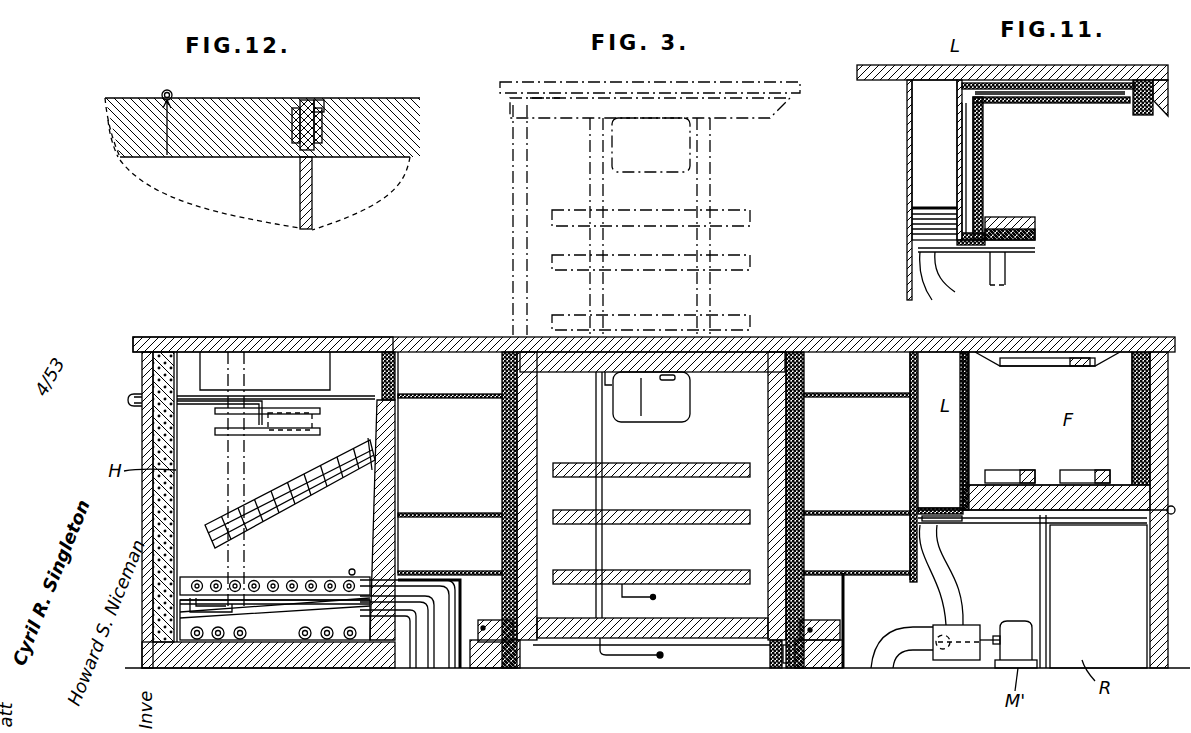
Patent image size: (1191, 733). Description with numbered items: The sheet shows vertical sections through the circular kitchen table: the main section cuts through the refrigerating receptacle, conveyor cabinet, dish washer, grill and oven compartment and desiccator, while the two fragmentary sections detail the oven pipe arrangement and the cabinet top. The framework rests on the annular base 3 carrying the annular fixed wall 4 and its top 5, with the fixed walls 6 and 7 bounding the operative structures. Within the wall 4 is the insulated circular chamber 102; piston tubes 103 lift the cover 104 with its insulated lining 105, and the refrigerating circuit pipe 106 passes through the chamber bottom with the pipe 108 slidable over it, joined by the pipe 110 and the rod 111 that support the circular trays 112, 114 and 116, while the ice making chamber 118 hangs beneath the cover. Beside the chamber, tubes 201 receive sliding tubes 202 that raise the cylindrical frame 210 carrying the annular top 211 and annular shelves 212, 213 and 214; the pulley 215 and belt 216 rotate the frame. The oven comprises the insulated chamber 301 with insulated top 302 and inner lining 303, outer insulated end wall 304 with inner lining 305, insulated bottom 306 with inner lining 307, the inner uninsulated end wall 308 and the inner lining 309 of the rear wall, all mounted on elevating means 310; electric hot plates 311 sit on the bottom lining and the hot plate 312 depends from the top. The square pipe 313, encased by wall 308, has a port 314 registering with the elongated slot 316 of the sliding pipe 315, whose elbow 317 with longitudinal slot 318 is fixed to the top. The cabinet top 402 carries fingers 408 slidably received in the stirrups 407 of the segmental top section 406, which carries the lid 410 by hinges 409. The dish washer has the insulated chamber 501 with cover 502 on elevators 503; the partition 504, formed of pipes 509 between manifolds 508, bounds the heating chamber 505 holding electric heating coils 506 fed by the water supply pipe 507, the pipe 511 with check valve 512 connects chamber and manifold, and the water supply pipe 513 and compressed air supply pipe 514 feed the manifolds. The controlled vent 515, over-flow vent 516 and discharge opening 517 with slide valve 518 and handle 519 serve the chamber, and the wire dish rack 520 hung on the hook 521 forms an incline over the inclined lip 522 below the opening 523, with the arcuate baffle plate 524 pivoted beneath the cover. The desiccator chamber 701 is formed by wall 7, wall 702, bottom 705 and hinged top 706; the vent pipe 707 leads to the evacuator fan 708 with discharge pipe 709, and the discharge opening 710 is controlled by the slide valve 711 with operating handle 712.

In FIG. 3, the annular base 3 is at (492, 668).
In FIG. 3, the annular fixed wall 4 is at (510, 668).
In FIG. 3, the top 5 is at (763, 86).
In FIG. 12, the fixed wall 6 is at (300, 215).
In FIG. 11, the fixed wall 6 is at (1150, 70).
In FIG. 3, the fixed wall 6 is at (142, 432).
In FIG. 11, the fixed wall 7 is at (907, 140).
In FIG. 3, the fixed wall 7 is at (398, 439).
In FIG. 3, the insulated circular chamber 102 is at (651, 619).
In FIG. 3, the piston tubes 103 is at (512, 160).
In FIG. 3, the cover 104 is at (690, 98).
In FIG. 3, the insulated lining 105 is at (618, 104).
In FIG. 3, the refrigerating circuit pipe 106 is at (663, 656).
In FIG. 3, the pipe 108 is at (600, 175).
In FIG. 3, the pipe 110 is at (605, 385).
In FIG. 3, the rod 111 is at (638, 599).
In FIG. 3, the circular tray 112 is at (698, 570).
In FIG. 3, the circular tray 114 is at (750, 258).
In FIG. 3, the circular tray 116 is at (725, 463).
In FIG. 3, the ice making chamber 118 is at (690, 395).
In FIG. 3, the tubes 201 is at (776, 668).
In FIG. 3, the tubes 202 is at (787, 668).
In FIG. 3, the cylindrical frame 210 is at (502, 431).
In FIG. 3, the annular top 211 is at (466, 337).
In FIG. 3, the annular shelf 212 is at (455, 394).
In FIG. 3, the annular shelf 213 is at (442, 513).
In FIG. 3, the annular shelf 214 is at (460, 571).
In FIG. 3, the pulley 215 is at (495, 620).
In FIG. 3, the belt 216 is at (850, 623).
In FIG. 3, the insulated chamber 301 is at (1050, 418).
In FIG. 11, the insulated top 302 is at (1110, 65).
In FIG. 3, the insulated top 302 is at (1045, 337).
In FIG. 3, the inner lining 303 is at (1100, 352).
In FIG. 11, the outer insulated end wall 304 is at (1150, 110).
In FIG. 3, the outer insulated end wall 304 is at (1133, 383).
In FIG. 11, the inner lining 305 is at (1135, 105).
In FIG. 3, the inner lining 305 is at (1132, 409).
In FIG. 11, the insulated bottom 306 is at (1035, 232).
In FIG. 3, the insulated bottom 306 is at (1072, 518).
In FIG. 11, the inner lining 307 is at (1022, 217).
In FIG. 3, the inner lining 307 is at (1085, 510).
In FIG. 11, the inner uninsulated end wall 308 is at (985, 188).
In FIG. 3, the inner uninsulated end wall 308 is at (970, 436).
In FIG. 3, the inner lining 309 is at (1107, 443).
In FIG. 11, the elevating means 310 is at (1005, 272).
In FIG. 3, the elevating means 310 is at (1040, 551).
In FIG. 3, the electric hot plates 311 is at (1065, 470).
In FIG. 3, the hot plate 312 is at (1060, 366).
In FIG. 11, the pipe 313 is at (960, 155).
In FIG. 11, the port 314 is at (957, 120).
In FIG. 11, the pipe 315 is at (985, 163).
In FIG. 11, the elongated slot 316 is at (962, 180).
In FIG. 11, the elbow 317 is at (1075, 103).
In FIG. 11, the longitudinal slot 318 is at (1038, 103).
In FIG. 12, the top 402 is at (372, 98).
In FIG. 12, the segmental top section 406 is at (215, 160).
In FIG. 12, the stirrups 407 is at (300, 142).
In FIG. 12, the fingers 408 is at (325, 148).
In FIG. 12, the hinges 409 is at (162, 92).
In FIG. 12, the lid 410 is at (110, 148).
In FIG. 3, the insulated chamber 501 is at (276, 453).
In FIG. 3, the cover 502 is at (245, 337).
In FIG. 3, the elevators 503 is at (240, 462).
In FIG. 3, the partition 504 is at (285, 640).
In FIG. 3, the heating chamber 505 is at (258, 640).
In FIG. 3, the electric heating coils 506 is at (335, 640).
In FIG. 3, the water supply pipe 507 is at (436, 668).
In FIG. 3, the manifolds 508 is at (205, 577).
In FIG. 3, the pipes 509 is at (303, 577).
In FIG. 3, the pipe 511 is at (238, 608).
In FIG. 3, the check valve 512 is at (198, 614).
In FIG. 3, the water supply pipe 513 is at (412, 668).
In FIG. 3, the compressed air supply pipe 514 is at (448, 668).
In FIG. 3, the controlled vent 515 is at (351, 568).
In FIG. 3, the over-flow vent 516 is at (315, 415).
In FIG. 3, the discharge opening 517 is at (300, 430).
In FIG. 3, the slide valve 518 is at (270, 437).
In FIG. 3, the handle 519 is at (128, 398).
In FIG. 3, the wire dish rack 520 is at (305, 510).
In FIG. 3, the hook 521 is at (365, 470).
In FIG. 3, the inclined lip 522 is at (378, 402).
In FIG. 3, the opening 523 is at (395, 352).
In FIG. 3, the arcuate baffle plate 524 is at (380, 352).
In FIG. 11, the chamber 701 is at (883, 190).
In FIG. 3, the chamber 701 is at (910, 414).
In FIG. 3, the wall 702 is at (960, 429).
In FIG. 11, the bottom 705 is at (913, 207).
In FIG. 3, the bottom 705 is at (925, 508).
In FIG. 11, the hinged top 706 is at (925, 65).
In FIG. 3, the hinged top 706 is at (942, 352).
In FIG. 11, the vent pipe 707 is at (945, 300).
In FIG. 3, the vent pipe 707 is at (962, 582).
In FIG. 3, the evacuator fan 708 is at (963, 660).
In FIG. 3, the discharge pipe 709 is at (882, 668).
In FIG. 3, the discharge opening 710 is at (945, 516).
In FIG. 3, the slide valve 711 is at (955, 523).
In FIG. 3, the operating handle 712 is at (1150, 530).